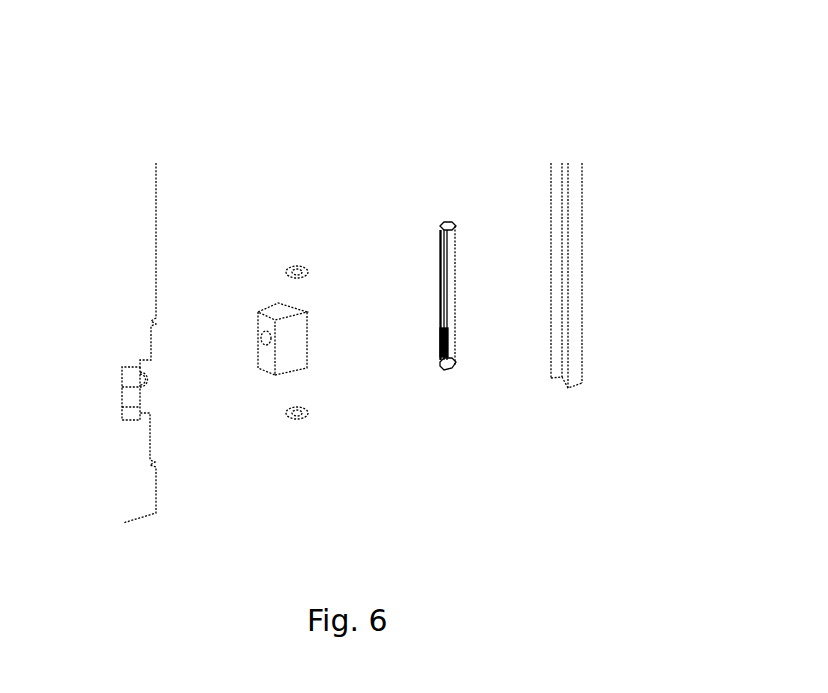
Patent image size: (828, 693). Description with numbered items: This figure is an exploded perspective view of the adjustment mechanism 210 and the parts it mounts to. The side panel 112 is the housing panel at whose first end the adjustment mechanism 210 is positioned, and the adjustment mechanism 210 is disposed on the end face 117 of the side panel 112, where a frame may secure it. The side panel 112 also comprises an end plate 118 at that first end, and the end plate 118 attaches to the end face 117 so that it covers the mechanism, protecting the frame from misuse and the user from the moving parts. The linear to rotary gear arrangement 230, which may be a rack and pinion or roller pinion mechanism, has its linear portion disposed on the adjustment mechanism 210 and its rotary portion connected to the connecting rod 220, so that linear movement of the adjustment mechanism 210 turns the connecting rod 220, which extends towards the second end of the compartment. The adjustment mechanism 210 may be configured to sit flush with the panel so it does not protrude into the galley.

The side panel 112 is at (137, 247).
The end face 117 is at (156, 292).
The end plate 118 is at (577, 263).
The adjustment mechanism 210 is at (450, 352).
The connecting rod 220 is at (132, 385).
The linear to rotary gear arrangement 230 is at (355, 208).